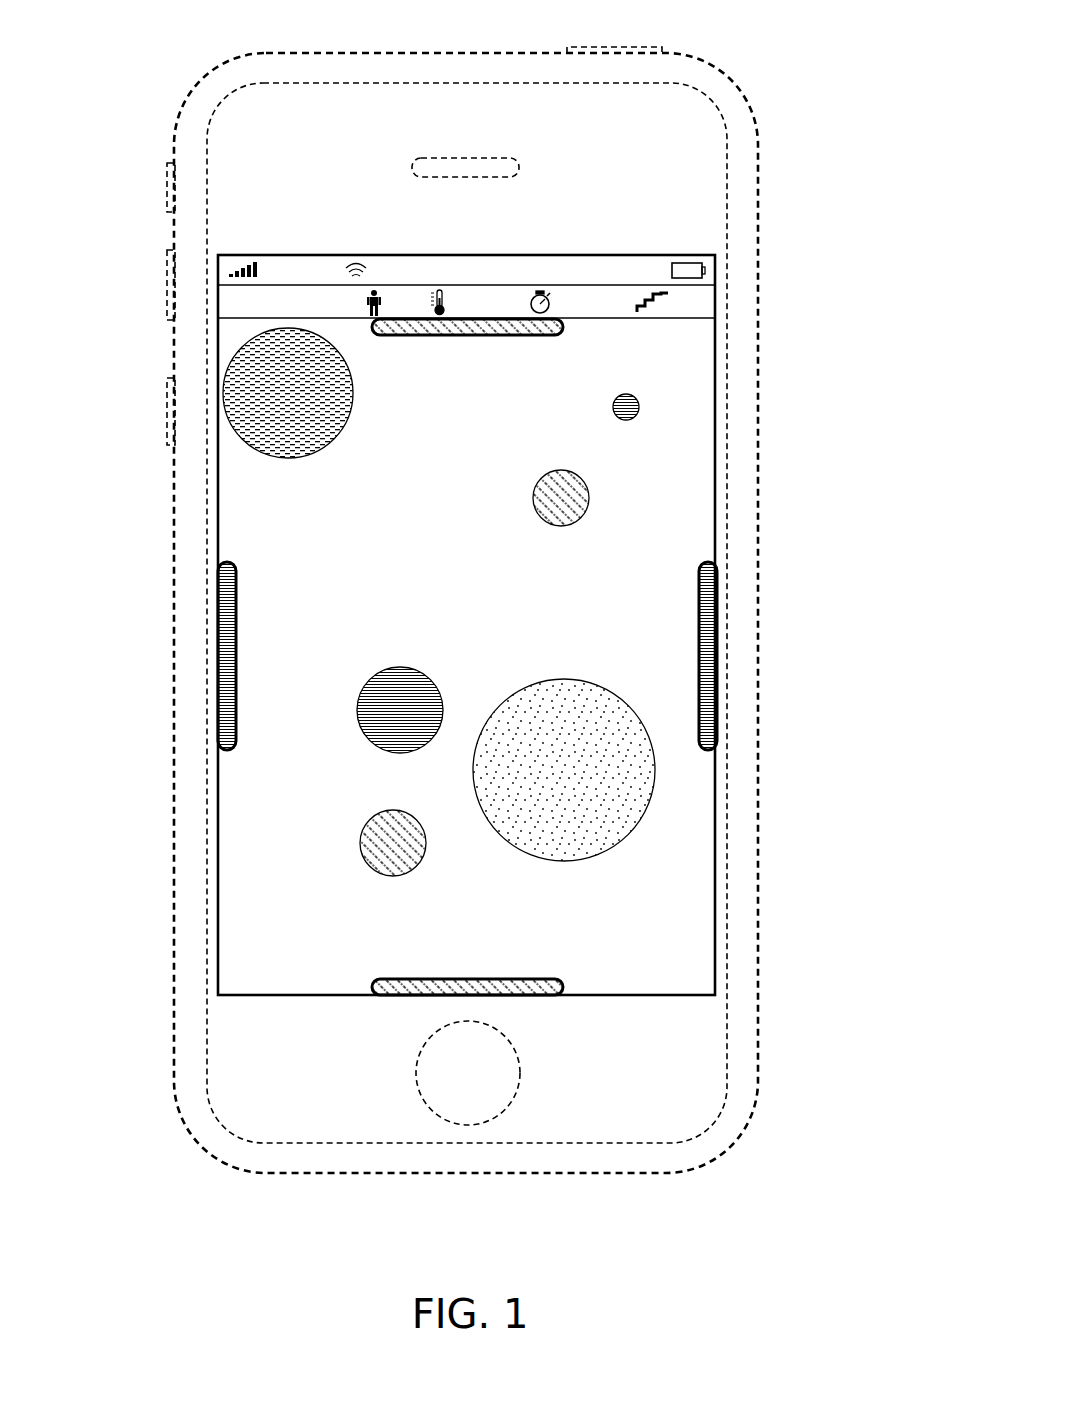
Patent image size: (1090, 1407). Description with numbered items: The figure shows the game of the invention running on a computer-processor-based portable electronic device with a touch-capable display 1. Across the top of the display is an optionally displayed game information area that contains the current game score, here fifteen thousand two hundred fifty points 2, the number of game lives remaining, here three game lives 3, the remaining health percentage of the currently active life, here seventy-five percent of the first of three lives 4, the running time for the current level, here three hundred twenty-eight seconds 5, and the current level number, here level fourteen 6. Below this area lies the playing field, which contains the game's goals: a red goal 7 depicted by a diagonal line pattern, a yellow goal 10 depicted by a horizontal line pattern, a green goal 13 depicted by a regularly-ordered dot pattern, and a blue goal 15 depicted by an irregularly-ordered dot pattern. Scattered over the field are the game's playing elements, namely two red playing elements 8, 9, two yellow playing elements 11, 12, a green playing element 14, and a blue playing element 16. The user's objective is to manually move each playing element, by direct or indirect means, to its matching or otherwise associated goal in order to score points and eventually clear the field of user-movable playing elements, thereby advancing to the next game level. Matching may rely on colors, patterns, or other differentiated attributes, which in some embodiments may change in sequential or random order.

The touch-capable display 1 is at (218, 347).
The current game score 2 is at (223, 303).
The number of game lives remaining 3 is at (383, 293).
The remaining health percentage 4 is at (468, 295).
The running time for the current game level 5 is at (573, 290).
The current level number 6 is at (677, 297).
The red goal 7 is at (565, 330).
The red playing element 8 is at (585, 505).
The red playing element 9 is at (397, 844).
The yellow goal 10 is at (707, 653).
The yellow playing element 11 is at (632, 408).
The yellow playing element 12 is at (400, 712).
The green goal 13 is at (467, 983).
The green playing element 14 is at (286, 403).
The blue goal 15 is at (225, 650).
The blue playing element 16 is at (577, 775).